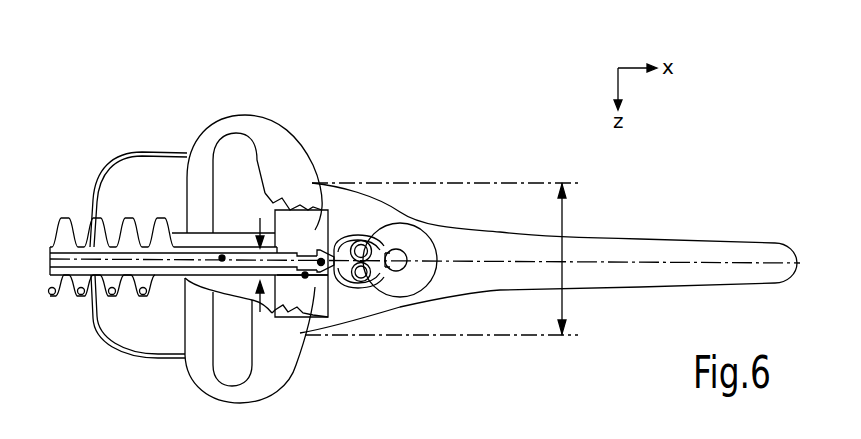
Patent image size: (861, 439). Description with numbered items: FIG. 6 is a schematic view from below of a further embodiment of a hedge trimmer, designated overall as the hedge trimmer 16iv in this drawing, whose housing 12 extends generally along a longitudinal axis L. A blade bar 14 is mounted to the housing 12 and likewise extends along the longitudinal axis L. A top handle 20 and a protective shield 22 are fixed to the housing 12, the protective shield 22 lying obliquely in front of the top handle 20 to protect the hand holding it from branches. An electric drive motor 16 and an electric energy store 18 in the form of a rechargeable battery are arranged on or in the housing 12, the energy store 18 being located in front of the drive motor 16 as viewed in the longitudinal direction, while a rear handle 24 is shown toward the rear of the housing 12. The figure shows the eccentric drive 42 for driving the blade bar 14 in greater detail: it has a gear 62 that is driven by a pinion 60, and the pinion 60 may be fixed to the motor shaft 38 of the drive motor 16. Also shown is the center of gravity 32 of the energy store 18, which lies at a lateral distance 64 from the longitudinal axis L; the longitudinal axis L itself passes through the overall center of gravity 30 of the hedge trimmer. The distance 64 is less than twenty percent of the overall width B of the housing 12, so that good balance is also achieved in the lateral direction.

The housing 12 is at (443, 290).
The blade bar 14 is at (80, 292).
The electric drive motor 16 is at (382, 298).
The electric energy store 18 is at (318, 185).
The top handle 20 is at (233, 118).
The protective shield 22 is at (112, 172).
The rear handle 24 is at (662, 252).
The center of gravity 30 is at (222, 258).
The center of gravity of the energy store 32 is at (317, 278).
The motor shaft 38 is at (400, 246).
The eccentric drive 42 is at (368, 226).
The pinion 60 is at (407, 258).
The gear 62 is at (352, 232).
The lateral distance 64 is at (305, 276).
The overall width B is at (562, 232).
The longitudinal axis L is at (758, 258).
The hedge trimmer 16iv is at (727, 135).